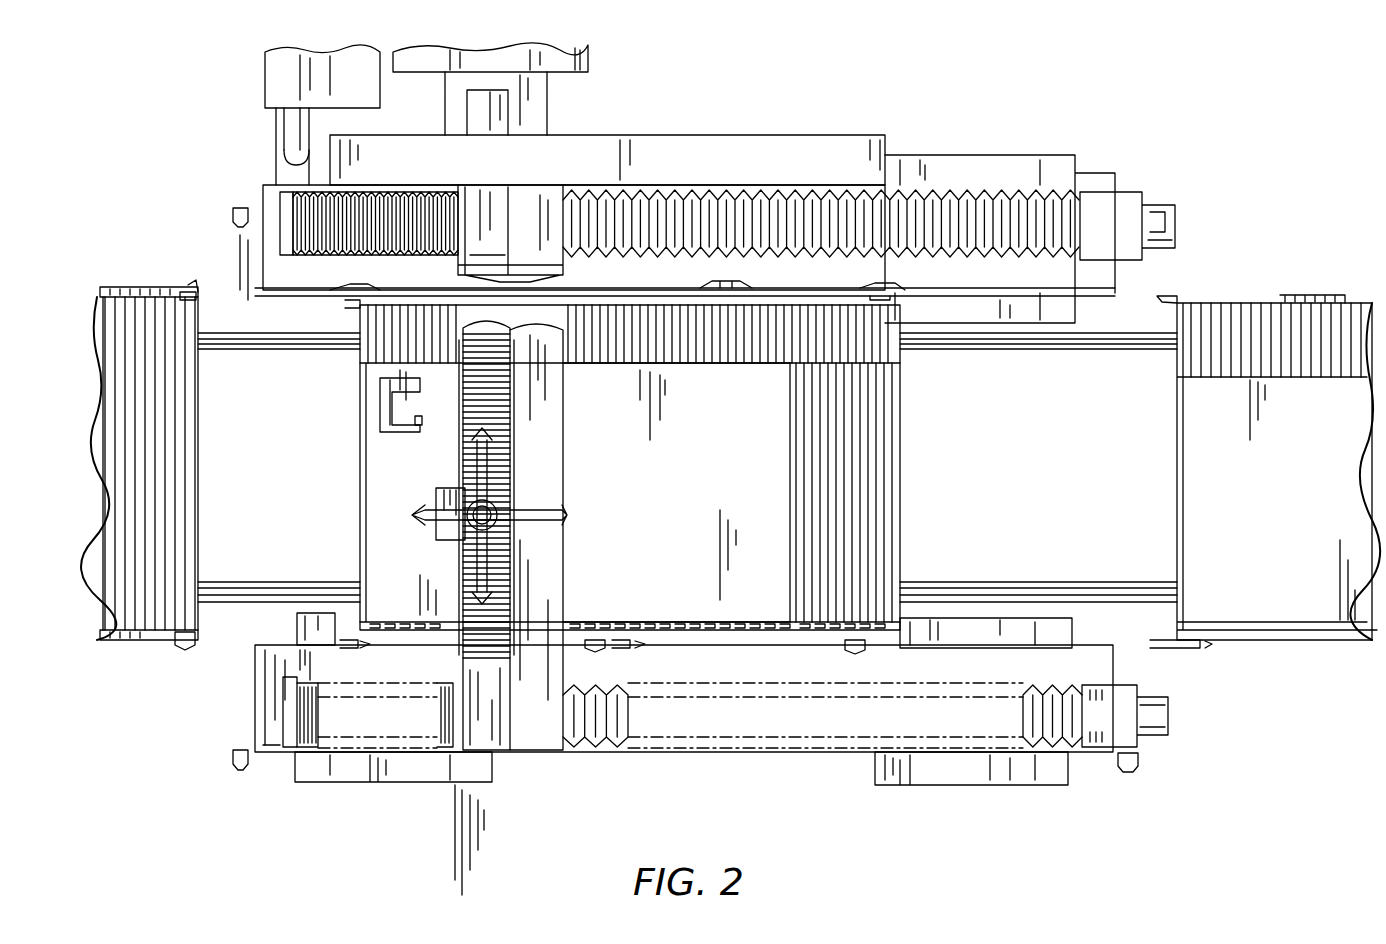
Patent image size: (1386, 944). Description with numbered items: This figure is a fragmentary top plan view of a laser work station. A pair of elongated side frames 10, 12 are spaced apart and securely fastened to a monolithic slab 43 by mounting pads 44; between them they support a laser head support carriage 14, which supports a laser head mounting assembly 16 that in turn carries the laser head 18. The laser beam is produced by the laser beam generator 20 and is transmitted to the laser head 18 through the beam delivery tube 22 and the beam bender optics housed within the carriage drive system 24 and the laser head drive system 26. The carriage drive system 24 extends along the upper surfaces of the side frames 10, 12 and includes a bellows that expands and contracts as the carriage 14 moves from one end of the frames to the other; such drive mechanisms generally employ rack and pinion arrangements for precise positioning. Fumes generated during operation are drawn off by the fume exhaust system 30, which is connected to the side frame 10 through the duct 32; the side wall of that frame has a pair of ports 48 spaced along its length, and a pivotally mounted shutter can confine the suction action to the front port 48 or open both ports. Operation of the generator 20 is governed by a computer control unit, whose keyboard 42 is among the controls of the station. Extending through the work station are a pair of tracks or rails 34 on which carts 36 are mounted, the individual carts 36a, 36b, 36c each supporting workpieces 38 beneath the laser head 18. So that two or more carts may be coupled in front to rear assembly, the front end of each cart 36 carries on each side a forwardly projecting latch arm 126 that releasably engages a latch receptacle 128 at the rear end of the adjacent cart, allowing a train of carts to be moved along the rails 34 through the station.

The side frame 10 is at (958, 185).
The side frame 12 is at (1120, 672).
The laser head support carriage 14 is at (542, 730).
The laser head mounting assembly 16 is at (425, 490).
The laser head 18 is at (445, 540).
The laser beam generator 20 is at (265, 80).
The beam delivery tube 22 is at (276, 150).
The carriage drive system 24 is at (625, 185).
The laser head drive system 26 is at (498, 404).
The fume exhaust system 30 is at (598, 58).
The duct 32 is at (547, 120).
The tracks or rails 34 is at (1118, 325).
The cart 36 is at (205, 568).
The carriage left section 36a is at (345, 375).
The carriage right section 36b is at (925, 520).
The right finned block 36c is at (1255, 295).
The workpiece 38 is at (656, 529).
The keyboard 42 is at (412, 770).
The monolithic slab 43 is at (1125, 638).
The mounting pads 44 is at (1073, 160).
The port 48 is at (750, 280).
The latch arm 126 is at (340, 292).
The latch receptacle 128 is at (188, 292).